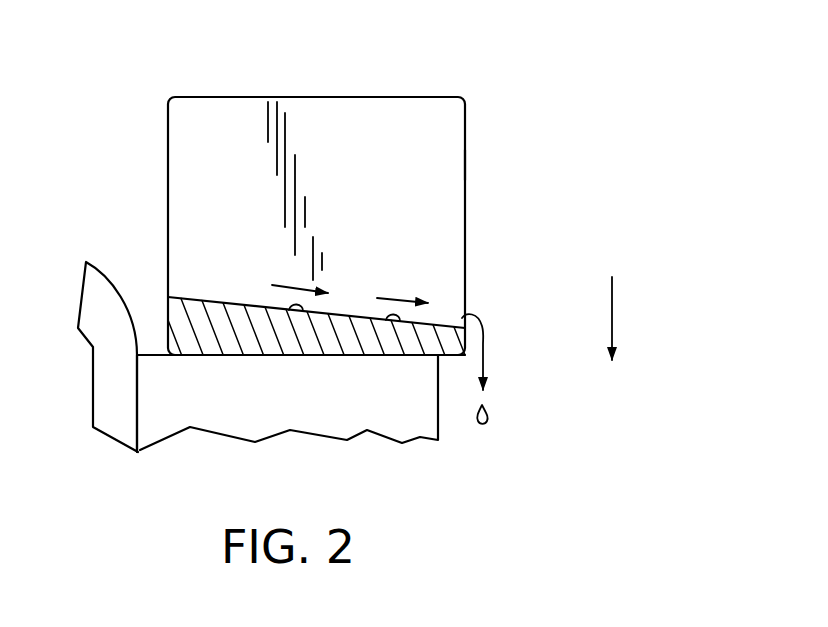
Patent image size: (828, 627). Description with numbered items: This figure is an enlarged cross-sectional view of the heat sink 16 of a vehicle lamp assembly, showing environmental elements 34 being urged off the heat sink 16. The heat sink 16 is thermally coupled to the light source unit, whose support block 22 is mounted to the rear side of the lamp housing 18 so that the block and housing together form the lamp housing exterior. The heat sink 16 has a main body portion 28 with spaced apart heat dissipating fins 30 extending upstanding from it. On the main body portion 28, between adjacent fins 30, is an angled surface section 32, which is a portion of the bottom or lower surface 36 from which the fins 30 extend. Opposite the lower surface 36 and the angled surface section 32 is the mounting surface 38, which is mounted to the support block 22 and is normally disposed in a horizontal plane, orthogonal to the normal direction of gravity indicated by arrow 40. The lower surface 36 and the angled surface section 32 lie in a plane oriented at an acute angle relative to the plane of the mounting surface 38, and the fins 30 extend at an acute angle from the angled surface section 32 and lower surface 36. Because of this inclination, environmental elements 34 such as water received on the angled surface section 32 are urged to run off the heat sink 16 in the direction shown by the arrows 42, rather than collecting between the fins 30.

The heat sink 16 is at (472, 165).
The lamp housing 18 is at (102, 273).
The support block 22 is at (387, 427).
The main body portion 28 is at (282, 345).
The fins 30 is at (378, 112).
The angled surface section 32 is at (222, 298).
The environmental elements 34 is at (293, 305).
The lower surface 36 is at (338, 313).
The mounting surface 38 is at (212, 355).
The arrow indicating normal direction of gravity 40 is at (613, 308).
The arrows indicating run off 42 is at (302, 287).